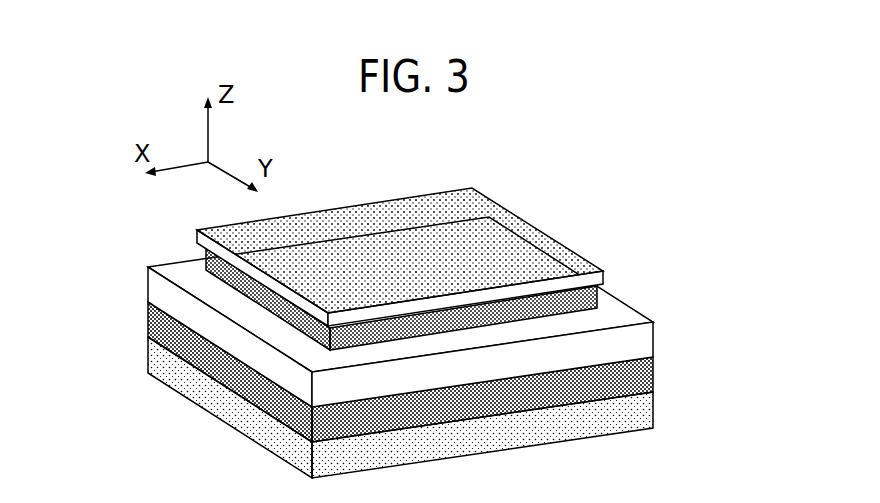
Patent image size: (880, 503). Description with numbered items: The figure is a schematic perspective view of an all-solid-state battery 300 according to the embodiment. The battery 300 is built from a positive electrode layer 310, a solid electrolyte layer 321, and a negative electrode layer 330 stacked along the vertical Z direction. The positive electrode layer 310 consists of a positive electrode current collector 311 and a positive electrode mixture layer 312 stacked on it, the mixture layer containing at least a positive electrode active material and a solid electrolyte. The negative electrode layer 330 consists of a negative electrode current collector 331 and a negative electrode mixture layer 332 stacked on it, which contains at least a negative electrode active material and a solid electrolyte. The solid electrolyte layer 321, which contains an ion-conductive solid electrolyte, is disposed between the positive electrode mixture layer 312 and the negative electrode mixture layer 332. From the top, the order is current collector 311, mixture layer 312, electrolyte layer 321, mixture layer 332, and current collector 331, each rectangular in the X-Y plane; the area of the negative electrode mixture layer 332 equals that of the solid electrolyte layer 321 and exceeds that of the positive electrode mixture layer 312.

The all-solid-state battery 300 is at (105, 187).
The positive electrode layer 310 is at (504, 262).
The positive electrode current collector 311 is at (567, 252).
The positive electrode mixture layer 312 is at (599, 292).
The solid electrolyte layer 321 is at (593, 347).
The negative electrode layer 330 is at (479, 390).
The negative electrode current collector 331 is at (597, 420).
The negative electrode mixture layer 332 is at (610, 385).